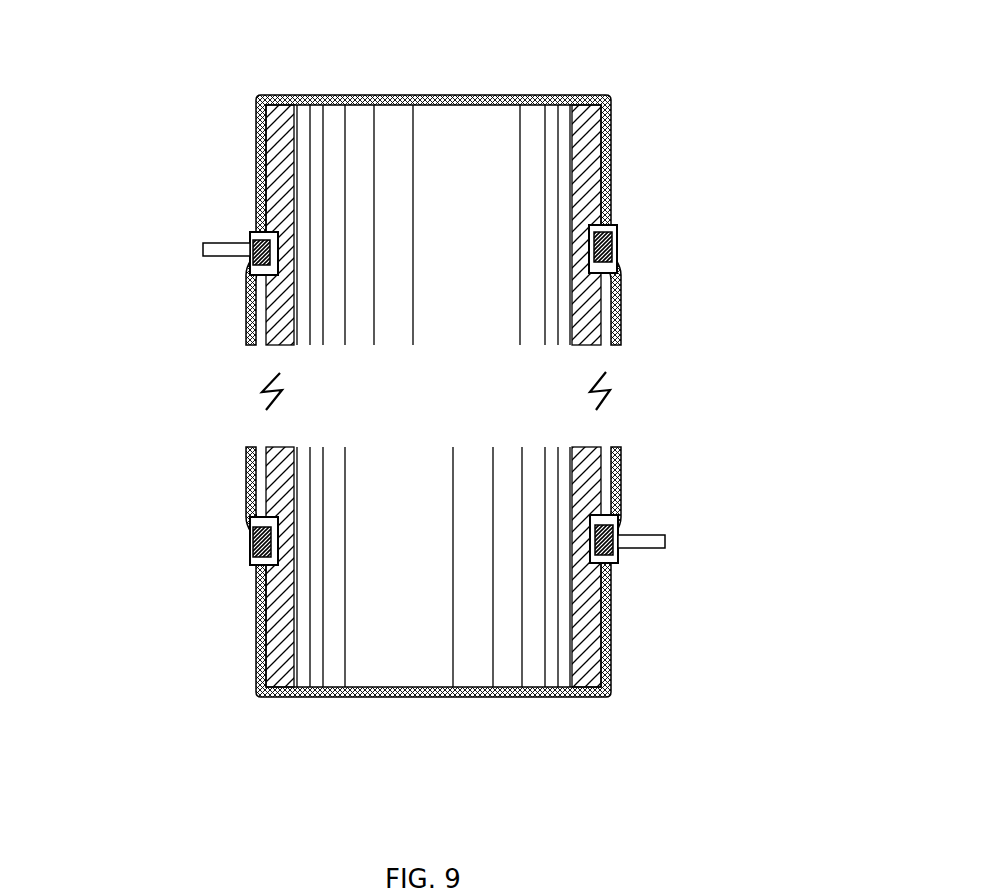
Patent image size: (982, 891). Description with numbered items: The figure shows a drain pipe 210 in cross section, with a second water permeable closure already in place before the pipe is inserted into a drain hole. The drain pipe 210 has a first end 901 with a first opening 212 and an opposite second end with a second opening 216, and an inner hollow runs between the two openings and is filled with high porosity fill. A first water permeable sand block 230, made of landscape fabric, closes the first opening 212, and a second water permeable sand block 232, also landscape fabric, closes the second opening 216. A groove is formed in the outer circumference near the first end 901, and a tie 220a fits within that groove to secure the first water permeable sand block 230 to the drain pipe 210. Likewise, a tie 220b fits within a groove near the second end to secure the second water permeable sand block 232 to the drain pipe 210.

The first end 901 is at (441, 400).
The drain pipe 210 is at (264, 173).
The first opening 212 is at (461, 64).
The second opening 216 is at (476, 731).
The tie 220a is at (617, 248).
The tie 220b is at (252, 542).
The first water permeable sand block 230 is at (612, 170).
The second water permeable sand block 232 is at (256, 622).